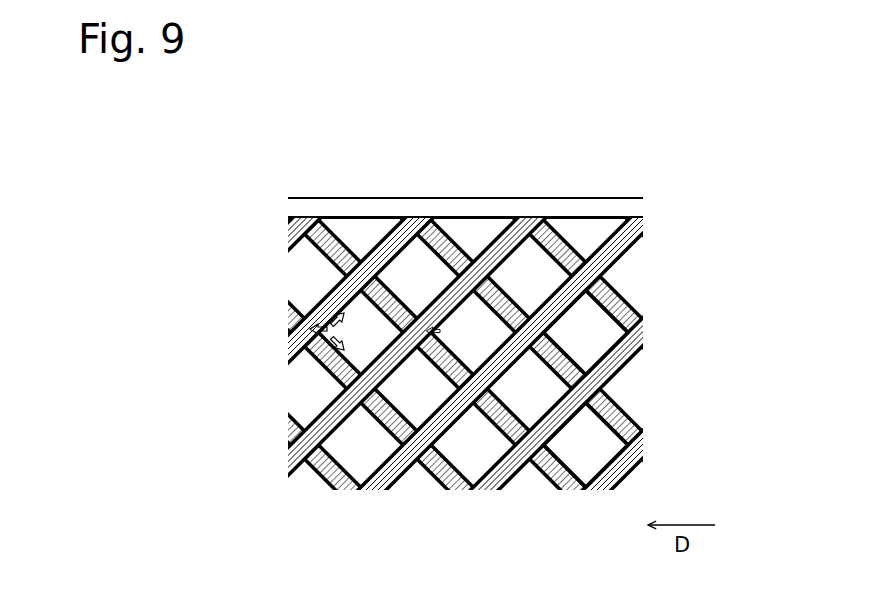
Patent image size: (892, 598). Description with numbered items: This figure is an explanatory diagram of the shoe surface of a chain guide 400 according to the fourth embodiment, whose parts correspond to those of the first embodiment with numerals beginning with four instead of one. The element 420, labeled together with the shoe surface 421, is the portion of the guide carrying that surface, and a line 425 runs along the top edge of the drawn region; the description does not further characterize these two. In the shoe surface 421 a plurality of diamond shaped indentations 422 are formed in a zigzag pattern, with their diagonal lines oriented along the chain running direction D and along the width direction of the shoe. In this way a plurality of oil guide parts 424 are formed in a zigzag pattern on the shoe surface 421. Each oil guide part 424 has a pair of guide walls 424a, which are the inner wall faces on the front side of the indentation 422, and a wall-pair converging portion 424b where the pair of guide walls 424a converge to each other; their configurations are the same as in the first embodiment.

The chain guide 400 is at (702, 235).
The mesh layer 420 is at (155, 197).
The shoe surface 421 is at (446, 299).
The diamond shaped indentations 422 is at (583, 332).
The oil guide parts 424 is at (625, 188).
The guide walls 424a is at (452, 297).
The wall-pair converging portion 424b is at (425, 323).
The edge line 425 is at (343, 208).